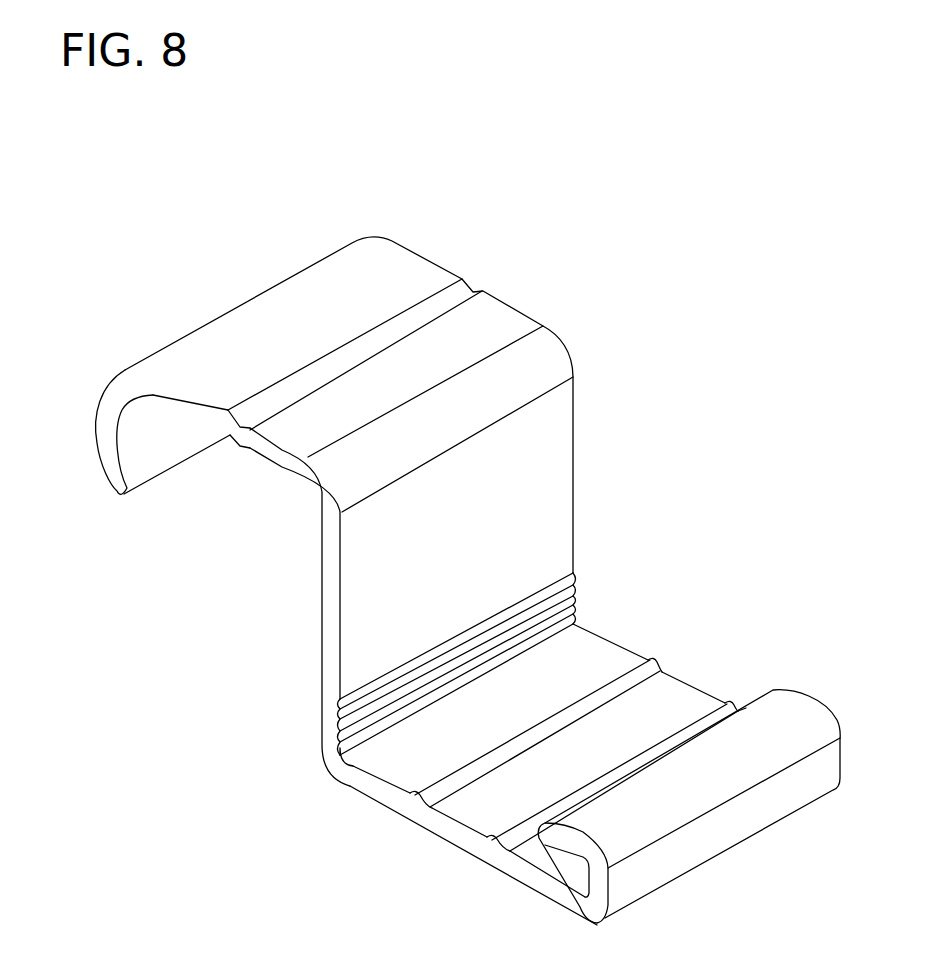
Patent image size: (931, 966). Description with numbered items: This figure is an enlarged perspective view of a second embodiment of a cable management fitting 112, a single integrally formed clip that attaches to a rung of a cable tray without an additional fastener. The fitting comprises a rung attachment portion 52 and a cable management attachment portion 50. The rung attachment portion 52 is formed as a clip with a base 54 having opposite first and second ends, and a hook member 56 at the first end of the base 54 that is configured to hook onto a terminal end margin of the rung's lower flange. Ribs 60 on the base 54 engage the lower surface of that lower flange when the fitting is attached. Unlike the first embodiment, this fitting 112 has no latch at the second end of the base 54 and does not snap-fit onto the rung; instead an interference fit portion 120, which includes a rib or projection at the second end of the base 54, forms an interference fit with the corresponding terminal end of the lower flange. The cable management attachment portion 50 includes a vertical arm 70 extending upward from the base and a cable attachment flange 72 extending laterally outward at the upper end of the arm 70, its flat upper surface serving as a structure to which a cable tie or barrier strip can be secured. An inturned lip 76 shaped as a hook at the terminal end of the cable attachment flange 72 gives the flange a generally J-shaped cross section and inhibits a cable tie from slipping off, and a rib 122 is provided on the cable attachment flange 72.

The cable management fitting 112 is at (626, 205).
The cable attachment flange 72 is at (398, 293).
The rib 122 is at (243, 448).
The inturned lip 76 is at (107, 462).
The cable management attachment portion 50 is at (306, 647).
The vertical arm 70 is at (530, 488).
The interference fit portion 120 is at (583, 583).
The rung attachment portion 52 is at (392, 826).
The base 54 is at (493, 856).
The ribs 60 is at (654, 666).
The hook member 56 is at (717, 782).